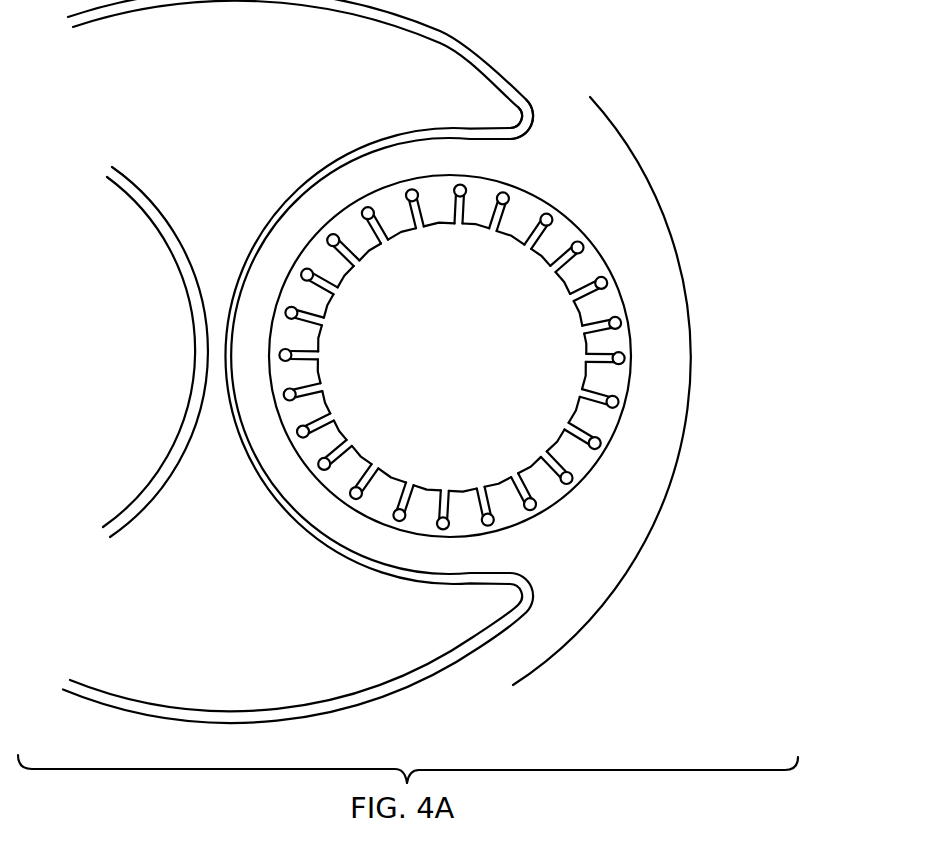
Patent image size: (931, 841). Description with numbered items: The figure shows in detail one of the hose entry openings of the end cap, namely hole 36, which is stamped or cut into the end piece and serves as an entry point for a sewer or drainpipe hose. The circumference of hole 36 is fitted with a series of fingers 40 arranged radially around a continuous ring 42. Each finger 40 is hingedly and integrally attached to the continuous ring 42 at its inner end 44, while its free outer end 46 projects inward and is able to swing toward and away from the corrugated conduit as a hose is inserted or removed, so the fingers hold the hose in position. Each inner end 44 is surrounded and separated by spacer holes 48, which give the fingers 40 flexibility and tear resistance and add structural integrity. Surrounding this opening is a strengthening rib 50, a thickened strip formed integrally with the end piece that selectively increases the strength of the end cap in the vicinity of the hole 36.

The hole 36 is at (553, 313).
The finger 40 is at (600, 382).
The continuous ring 42 is at (587, 483).
The inner end 44 is at (620, 403).
The outer end 46 is at (557, 440).
The spacer hole 48 is at (625, 357).
The strengthening rib 50 is at (533, 117).